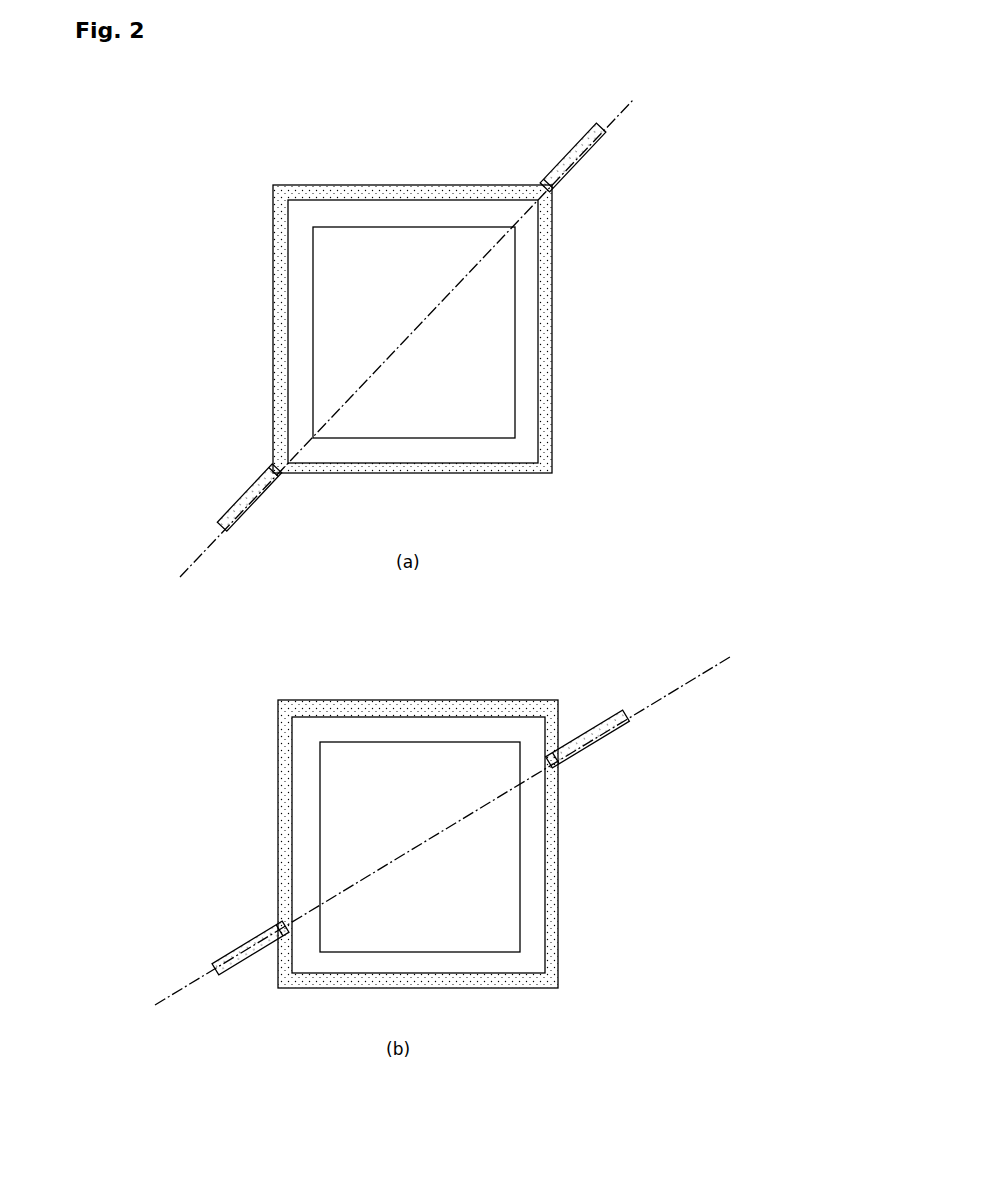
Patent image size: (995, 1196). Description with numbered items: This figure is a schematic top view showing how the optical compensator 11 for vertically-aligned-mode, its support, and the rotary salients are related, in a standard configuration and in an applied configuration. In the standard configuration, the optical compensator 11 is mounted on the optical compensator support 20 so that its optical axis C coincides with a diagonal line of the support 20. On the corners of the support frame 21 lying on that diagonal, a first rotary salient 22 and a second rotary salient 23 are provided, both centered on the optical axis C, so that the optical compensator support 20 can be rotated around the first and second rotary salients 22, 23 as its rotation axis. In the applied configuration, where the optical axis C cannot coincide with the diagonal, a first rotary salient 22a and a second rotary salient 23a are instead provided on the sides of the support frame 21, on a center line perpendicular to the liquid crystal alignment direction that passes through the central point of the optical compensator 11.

The optical compensator support 20 is at (406, 321).
The support frame 21 is at (275, 345).
The first rotary salient 22 is at (248, 490).
The second rotary salient 23 is at (580, 165).
The first rotary salient 22a is at (243, 940).
The second rotary salient 23a is at (587, 750).
The optical compensator for vertically-aligned-mode 11 is at (370, 423).
The optical axis C is at (613, 113).